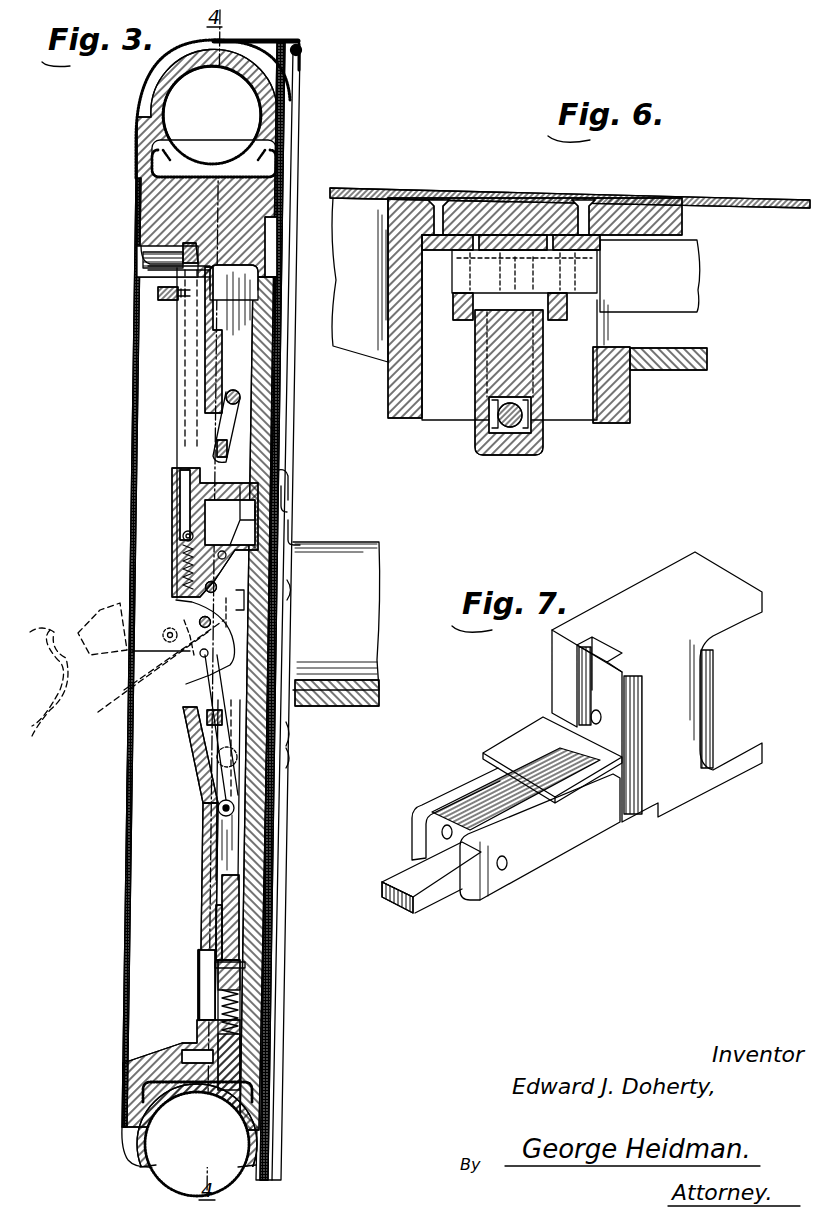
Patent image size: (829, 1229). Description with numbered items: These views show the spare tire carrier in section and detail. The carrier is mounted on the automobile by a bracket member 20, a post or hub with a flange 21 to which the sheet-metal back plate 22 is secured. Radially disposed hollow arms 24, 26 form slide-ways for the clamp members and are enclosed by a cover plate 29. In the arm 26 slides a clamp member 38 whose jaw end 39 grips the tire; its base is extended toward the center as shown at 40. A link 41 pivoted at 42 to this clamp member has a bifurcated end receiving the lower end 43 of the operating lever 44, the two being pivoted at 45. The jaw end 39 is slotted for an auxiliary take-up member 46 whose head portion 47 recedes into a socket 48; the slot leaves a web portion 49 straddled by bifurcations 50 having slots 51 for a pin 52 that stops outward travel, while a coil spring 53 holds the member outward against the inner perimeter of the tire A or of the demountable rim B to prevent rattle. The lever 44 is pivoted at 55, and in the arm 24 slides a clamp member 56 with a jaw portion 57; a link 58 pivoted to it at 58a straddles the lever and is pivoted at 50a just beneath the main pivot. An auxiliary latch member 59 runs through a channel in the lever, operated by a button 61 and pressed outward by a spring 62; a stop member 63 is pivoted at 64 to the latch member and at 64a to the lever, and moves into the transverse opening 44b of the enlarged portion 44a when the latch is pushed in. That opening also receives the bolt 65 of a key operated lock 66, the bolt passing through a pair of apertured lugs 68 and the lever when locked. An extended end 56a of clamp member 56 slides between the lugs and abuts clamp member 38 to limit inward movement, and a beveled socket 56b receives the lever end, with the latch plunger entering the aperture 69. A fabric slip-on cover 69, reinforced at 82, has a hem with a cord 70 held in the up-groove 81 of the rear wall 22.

In FIG. 3, the inner perimeter of the tire A is at (148, 94).
In FIG. 3, the inner perimeter of the demountable rim B is at (136, 160).
In FIG. 3, the bracket member 20 is at (360, 548).
In FIG. 3, the flange 21 is at (296, 540).
In FIG. 3, the back plate 22 is at (287, 150).
In FIG. 6, the back plate 22 is at (760, 199).
In FIG. 3, the radially disposed hollow arm 24 is at (266, 326).
In FIG. 6, the radially disposed hollow arm 24 is at (482, 197).
In FIG. 3, the radially disposed hollow arm 26 is at (262, 852).
In FIG. 3, the cover plate 29 is at (200, 858).
In FIG. 6, the cover plate 29 is at (708, 372).
In FIG. 3, the clamp member 38 is at (246, 868).
In FIG. 3, the outer or jaw end 39 is at (258, 1069).
In FIG. 3, the extended base portion 40 is at (262, 744).
In FIG. 3, the link 41 is at (236, 798).
In FIG. 3, the pivot 42 is at (200, 812).
In FIG. 3, the lower end of the operating lever 43 is at (200, 628).
In FIG. 3, the locking or operating lever 44 is at (175, 418).
In FIG. 6, the locking or operating lever 44 is at (530, 462).
In FIG. 3, the enlarged portion of the lever 44a is at (315, 474).
In FIG. 6, the enlarged portion of the lever 44a is at (540, 238).
In FIG. 3, the transverse opening 44b is at (170, 492).
In FIG. 3, the pivot point 45 is at (202, 660).
In FIG. 3, the auxiliary clamp or take-up member 46 is at (240, 1050).
In FIG. 3, the head portion 47 is at (184, 1056).
In FIG. 3, the socket 48 is at (182, 1056).
In FIG. 3, the transversely disposed web portion 49 is at (241, 894).
In FIG. 3, the bifurcations 50 is at (241, 914).
In FIG. 3, the pivot point 50a is at (264, 598).
In FIG. 3, the slots 51 is at (242, 954).
In FIG. 3, the pin 52 is at (246, 966).
In FIG. 3, the coil spring 53 is at (240, 1000).
In FIG. 3, the pivotal point 55 is at (176, 642).
In FIG. 3, the clamp member 56 is at (270, 192).
In FIG. 7, the clamp member 56 is at (678, 788).
In FIG. 3, the extended end 56a is at (268, 452).
In FIG. 7, the extended end 56a is at (418, 915).
In FIG. 3, the groove or socket 56b is at (140, 258).
In FIG. 7, the groove or socket 56b is at (576, 679).
In FIG. 3, the jaw portion 57 is at (138, 134).
In FIG. 7, the jaw portion 57 is at (716, 736).
In FIG. 3, the link 58 is at (238, 432).
In FIG. 3, the pivot point 58a is at (241, 396).
In FIG. 7, the pivot point 58a is at (449, 829).
In FIG. 3, the auxiliary latch member 59 is at (186, 269).
In FIG. 6, the auxiliary latch member 59 is at (506, 430).
In FIG. 3, the finger grasp or button 61 is at (157, 296).
In FIG. 3, the spring 62 is at (182, 550).
In FIG. 3, the stop or lock member 63 is at (200, 566).
In FIG. 6, the stop or lock member 63 is at (480, 428).
In FIG. 3, the pivot 64 is at (182, 532).
In FIG. 3, the intermediate pivot point 64a is at (260, 530).
In FIG. 3, the latch member or bolt 65 is at (289, 498).
In FIG. 6, the latch member or bolt 65 is at (515, 265).
In FIG. 6, the key operated lock 66 is at (676, 288).
In FIG. 6, the apertured lugs 68 is at (632, 228).
In FIG. 3, the aperture / slip-on cover 69 is at (120, 790).
In FIG. 7, the aperture / slip-on cover 69 is at (586, 716).
In FIG. 3, the flexible cord or wire 70 is at (302, 49).
In FIG. 3, the up-groove 81 is at (301, 62).
In FIG. 3, the reenforcement 82 is at (266, 40).